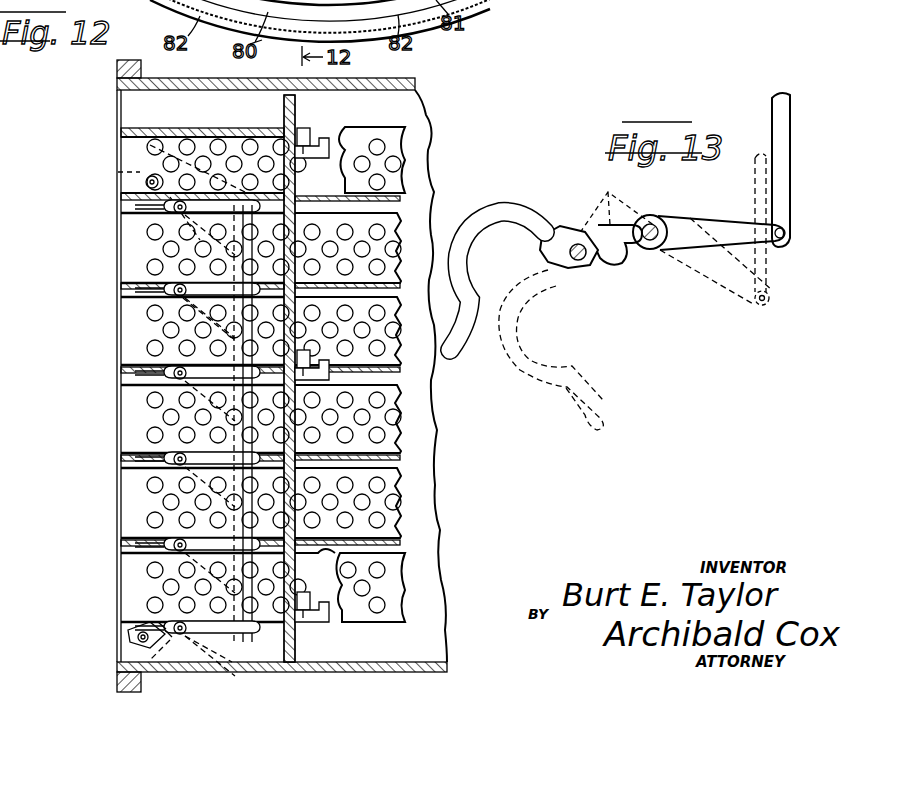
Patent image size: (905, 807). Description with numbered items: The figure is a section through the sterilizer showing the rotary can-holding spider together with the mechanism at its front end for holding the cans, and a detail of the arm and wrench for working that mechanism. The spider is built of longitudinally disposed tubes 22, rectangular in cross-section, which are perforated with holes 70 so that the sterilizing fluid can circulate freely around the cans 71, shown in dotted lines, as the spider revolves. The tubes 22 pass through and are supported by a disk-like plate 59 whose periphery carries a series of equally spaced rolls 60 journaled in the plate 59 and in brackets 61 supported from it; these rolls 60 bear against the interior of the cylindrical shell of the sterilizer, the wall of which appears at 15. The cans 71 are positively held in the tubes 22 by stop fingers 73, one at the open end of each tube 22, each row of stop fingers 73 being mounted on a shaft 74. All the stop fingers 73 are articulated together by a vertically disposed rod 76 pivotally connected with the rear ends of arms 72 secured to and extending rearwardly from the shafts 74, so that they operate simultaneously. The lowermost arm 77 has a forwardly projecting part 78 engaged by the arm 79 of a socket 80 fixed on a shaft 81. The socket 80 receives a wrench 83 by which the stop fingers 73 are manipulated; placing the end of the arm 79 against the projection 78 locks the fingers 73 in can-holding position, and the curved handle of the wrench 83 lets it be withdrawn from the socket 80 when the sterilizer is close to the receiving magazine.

In FIG. 12, the casing wall 15 is at (414, 83).
In FIG. 12, the tubes 22 is at (380, 187).
In FIG. 12, the disk-like plate 59 is at (297, 112).
In FIG. 12, the rolls 60 is at (308, 140).
In FIG. 12, the brackets 61 is at (396, 148).
In FIG. 12, the holes 70 is at (175, 160).
In FIG. 12, the cans 71 is at (150, 182).
In FIG. 12, the arms 72 is at (160, 343).
In FIG. 12, the stop fingers 73 is at (150, 207).
In FIG. 12, the shaft 74 is at (150, 213).
In FIG. 12, the rod 76 is at (240, 247).
In FIG. 13, the rod 76 is at (782, 140).
In FIG. 12, the lowermost arm 77 is at (242, 641).
In FIG. 13, the lowermost arm 77 is at (719, 225).
In FIG. 12, the forwardly projecting part 78 is at (210, 632).
In FIG. 13, the forwardly projecting part 78 is at (615, 205).
In FIG. 12, the arm 79 is at (168, 632).
In FIG. 13, the arm 79 is at (614, 263).
In FIG. 12, the socket 80 is at (133, 628).
In FIG. 13, the socket 80 is at (560, 228).
In FIG. 12, the shaft 81 is at (136, 638).
In FIG. 13, the shaft 81 is at (576, 263).
In FIG. 13, the wrench 83 is at (502, 220).